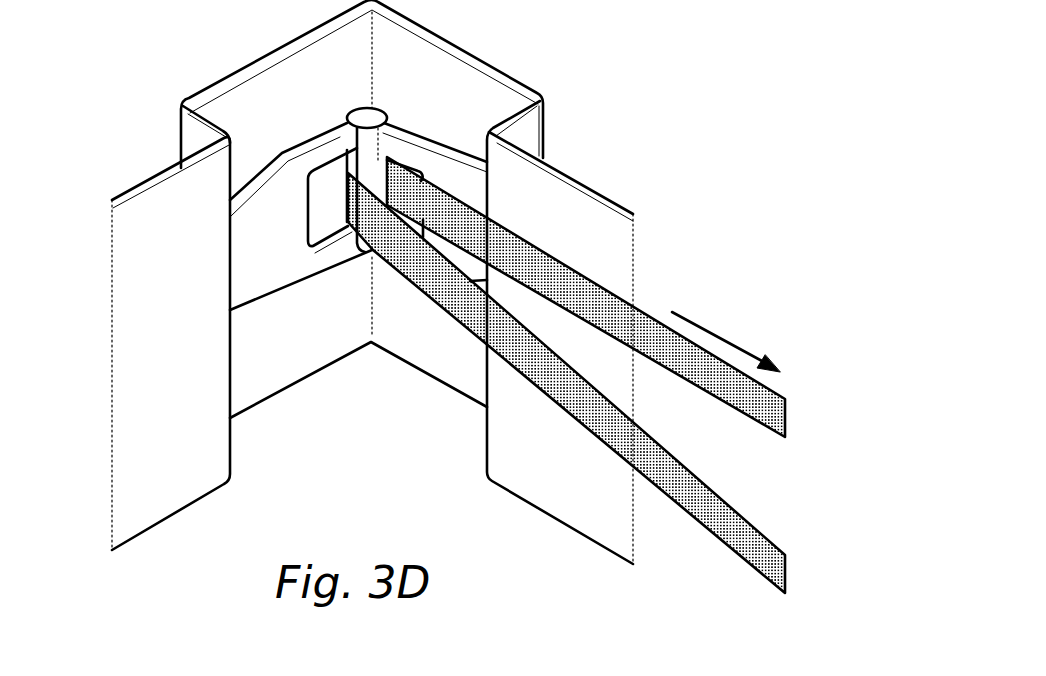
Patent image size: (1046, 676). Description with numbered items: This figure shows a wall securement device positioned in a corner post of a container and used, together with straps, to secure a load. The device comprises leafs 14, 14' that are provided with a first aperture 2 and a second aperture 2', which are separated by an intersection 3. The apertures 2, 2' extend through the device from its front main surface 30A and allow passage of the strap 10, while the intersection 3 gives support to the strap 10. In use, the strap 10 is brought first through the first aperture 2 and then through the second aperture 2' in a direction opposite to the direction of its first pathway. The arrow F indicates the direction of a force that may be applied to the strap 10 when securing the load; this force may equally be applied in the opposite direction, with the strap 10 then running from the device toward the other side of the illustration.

The front main surface 30A is at (255, 233).
The leaf 14 is at (586, 297).
The leaf 14' is at (197, 315).
The first aperture 2 is at (527, 128).
The second aperture 2' is at (220, 195).
The intersection 3 is at (365, 115).
The strap 10 is at (708, 520).
The force direction F is at (720, 338).